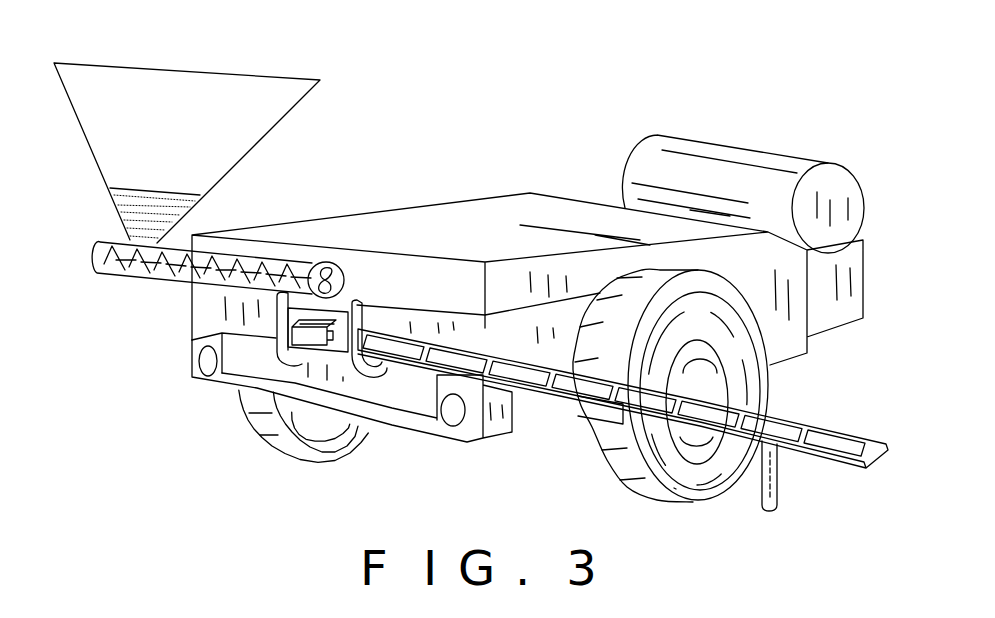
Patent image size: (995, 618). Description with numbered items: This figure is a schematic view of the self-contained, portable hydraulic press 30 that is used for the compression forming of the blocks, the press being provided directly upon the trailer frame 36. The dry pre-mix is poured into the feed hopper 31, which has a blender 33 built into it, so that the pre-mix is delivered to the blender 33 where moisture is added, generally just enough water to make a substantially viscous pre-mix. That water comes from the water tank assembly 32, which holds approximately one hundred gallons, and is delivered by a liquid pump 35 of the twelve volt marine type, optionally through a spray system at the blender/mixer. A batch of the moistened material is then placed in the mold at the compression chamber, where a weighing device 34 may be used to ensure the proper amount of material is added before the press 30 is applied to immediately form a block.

The mobile dispensing machine 30 is at (487, 176).
The hopper 31 is at (222, 73).
The cylindrical tank 32 is at (775, 153).
The auger conveyor 33 is at (112, 272).
The gauge 34 is at (327, 262).
The mounting bracket 35 is at (279, 352).
The rail with support post 36 is at (753, 447).